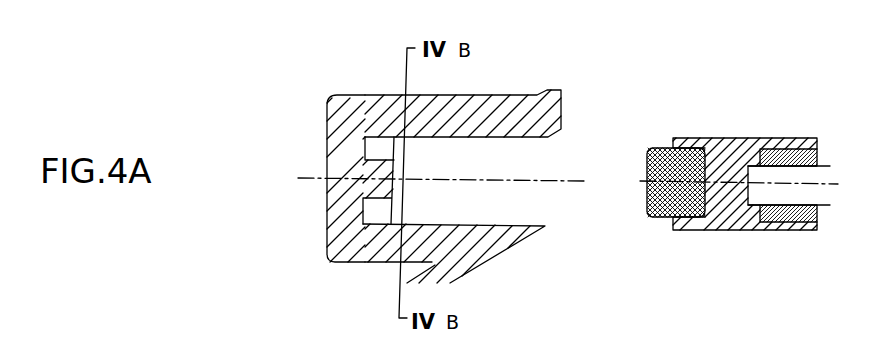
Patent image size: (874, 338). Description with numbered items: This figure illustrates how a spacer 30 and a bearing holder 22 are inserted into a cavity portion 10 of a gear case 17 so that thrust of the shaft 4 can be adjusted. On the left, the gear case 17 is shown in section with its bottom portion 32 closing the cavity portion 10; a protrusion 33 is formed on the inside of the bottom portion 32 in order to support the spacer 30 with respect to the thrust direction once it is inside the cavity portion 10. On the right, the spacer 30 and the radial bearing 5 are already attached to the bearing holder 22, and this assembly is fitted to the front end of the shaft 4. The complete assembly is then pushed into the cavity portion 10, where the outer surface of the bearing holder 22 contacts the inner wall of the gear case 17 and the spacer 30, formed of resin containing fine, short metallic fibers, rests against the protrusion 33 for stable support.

The gear case bottom portion 32 is at (343, 117).
The gear case 17 is at (497, 105).
The protrusion 33 is at (375, 190).
The cavity portion 10 is at (323, 258).
The bearing holder 22 is at (735, 142).
The spacer 30 is at (667, 150).
The radial bearing 5 is at (795, 142).
The shaft 4 is at (735, 231).